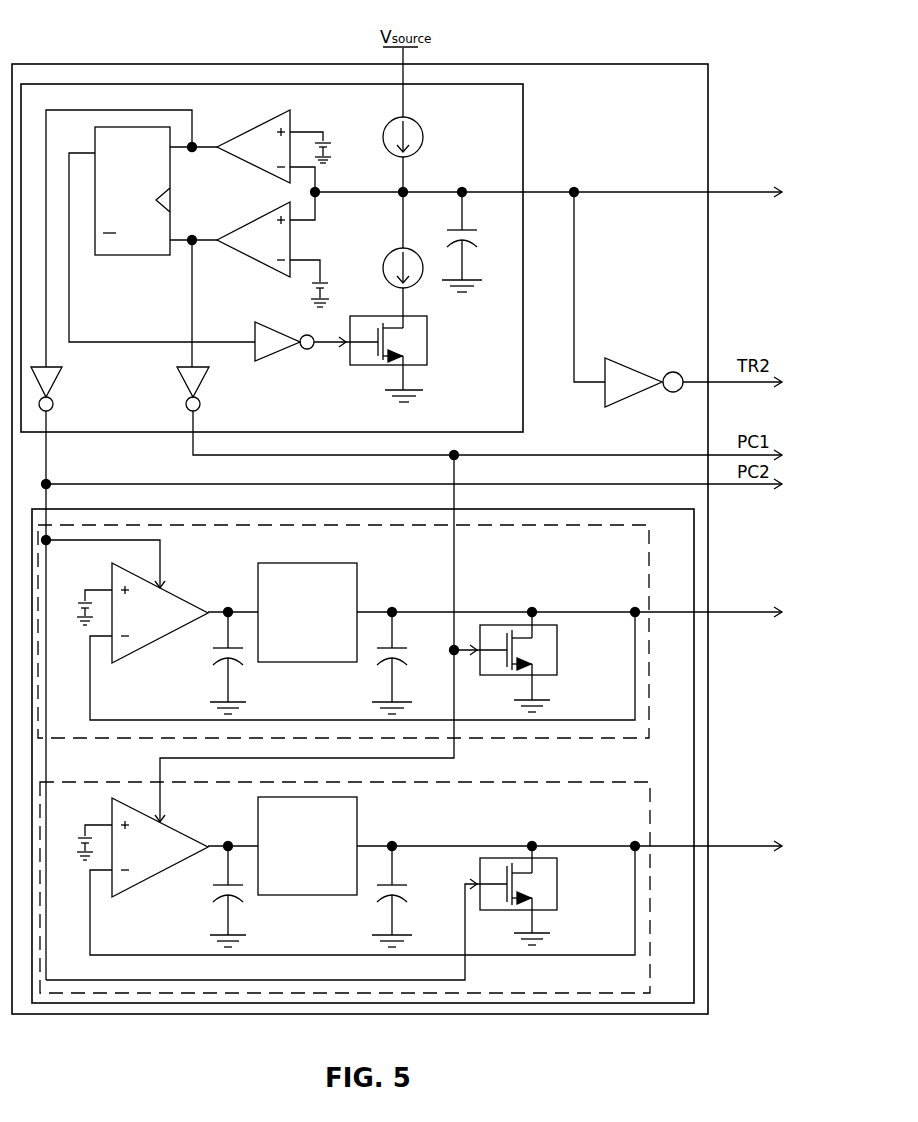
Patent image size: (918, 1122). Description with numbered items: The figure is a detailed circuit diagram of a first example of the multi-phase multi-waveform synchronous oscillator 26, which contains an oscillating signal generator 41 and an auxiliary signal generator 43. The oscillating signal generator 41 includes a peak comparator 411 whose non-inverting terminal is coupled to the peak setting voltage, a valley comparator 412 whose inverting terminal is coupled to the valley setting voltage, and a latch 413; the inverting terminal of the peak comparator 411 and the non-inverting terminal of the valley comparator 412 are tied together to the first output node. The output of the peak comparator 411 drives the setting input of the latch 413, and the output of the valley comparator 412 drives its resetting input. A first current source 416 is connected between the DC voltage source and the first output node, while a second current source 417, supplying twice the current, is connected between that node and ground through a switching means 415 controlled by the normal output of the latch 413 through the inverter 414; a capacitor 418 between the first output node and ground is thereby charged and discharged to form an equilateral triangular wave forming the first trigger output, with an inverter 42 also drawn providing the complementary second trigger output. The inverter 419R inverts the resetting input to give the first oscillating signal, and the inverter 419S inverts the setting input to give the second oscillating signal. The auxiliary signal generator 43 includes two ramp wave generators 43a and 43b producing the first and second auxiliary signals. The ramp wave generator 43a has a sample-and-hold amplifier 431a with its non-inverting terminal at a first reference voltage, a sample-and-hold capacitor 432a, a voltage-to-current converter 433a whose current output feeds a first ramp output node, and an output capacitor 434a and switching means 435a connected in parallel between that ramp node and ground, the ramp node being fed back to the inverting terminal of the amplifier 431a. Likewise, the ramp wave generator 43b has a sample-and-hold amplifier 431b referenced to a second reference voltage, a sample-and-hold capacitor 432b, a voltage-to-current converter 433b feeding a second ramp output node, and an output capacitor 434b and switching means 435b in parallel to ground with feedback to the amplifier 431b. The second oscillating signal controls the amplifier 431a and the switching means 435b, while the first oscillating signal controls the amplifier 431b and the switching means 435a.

The multi-phase multi-waveform synchronous oscillator 26 is at (708, 70).
The oscillating signal generator 41 is at (523, 152).
The peak comparator 411 is at (243, 134).
The valley comparator 412 is at (240, 226).
The latch 413 is at (170, 186).
The inverter 414 is at (278, 330).
The switching means 415 is at (427, 341).
The first current source 416 is at (418, 128).
The second current source 417 is at (390, 253).
The capacitor 418 is at (481, 240).
The inverter 419S is at (62, 371).
The inverter 419R is at (209, 371).
The inverter 42 is at (637, 367).
The auxiliary signal generator 43 is at (648, 509).
The ramp wave generator 43a is at (650, 557).
The ramp wave generator 43b is at (650, 802).
The sample-and-hold amplifier 431a is at (183, 600).
The sample-and-hold capacitor 432a is at (211, 657).
The voltage-to-current converter 433a is at (357, 585).
The output capacitor 434a is at (413, 666).
The switching means 435a is at (557, 651).
The sample-and-hold amplifier 431b is at (183, 835).
The sample-and-hold capacitor 432b is at (211, 892).
The voltage-to-current converter 433b is at (357, 825).
The output capacitor 434b is at (413, 900).
The switching means 435b is at (557, 886).